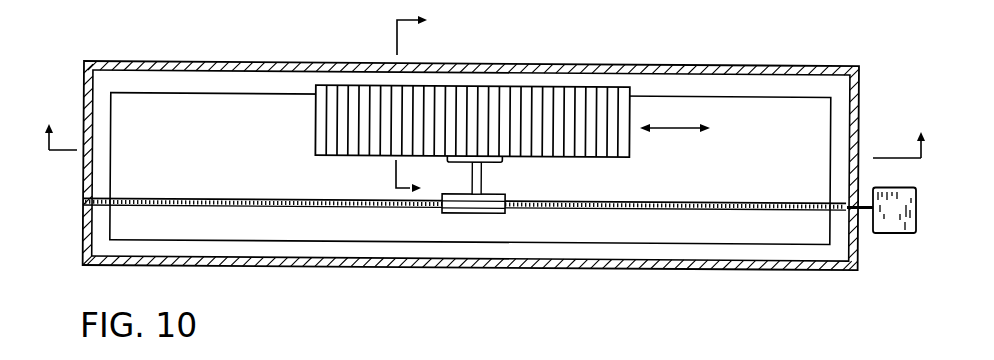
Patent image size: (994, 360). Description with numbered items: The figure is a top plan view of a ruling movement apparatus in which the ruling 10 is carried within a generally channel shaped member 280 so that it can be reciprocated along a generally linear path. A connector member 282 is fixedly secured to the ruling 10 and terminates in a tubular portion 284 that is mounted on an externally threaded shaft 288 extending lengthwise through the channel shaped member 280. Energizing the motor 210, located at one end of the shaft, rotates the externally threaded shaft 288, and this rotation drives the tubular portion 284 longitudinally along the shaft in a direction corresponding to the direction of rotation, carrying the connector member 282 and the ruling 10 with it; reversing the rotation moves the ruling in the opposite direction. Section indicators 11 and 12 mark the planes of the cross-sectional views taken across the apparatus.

The ruling 10 is at (534, 87).
The section line 11-11 indicator 11 is at (923, 123).
The section line 12-12 indicator 12 is at (429, 104).
The motor 210 is at (887, 233).
The channel shaped member 280 is at (78, 241).
The connector member 282 is at (485, 176).
The tubular portion 284 is at (480, 209).
The externally threaded shaft 288 is at (694, 203).